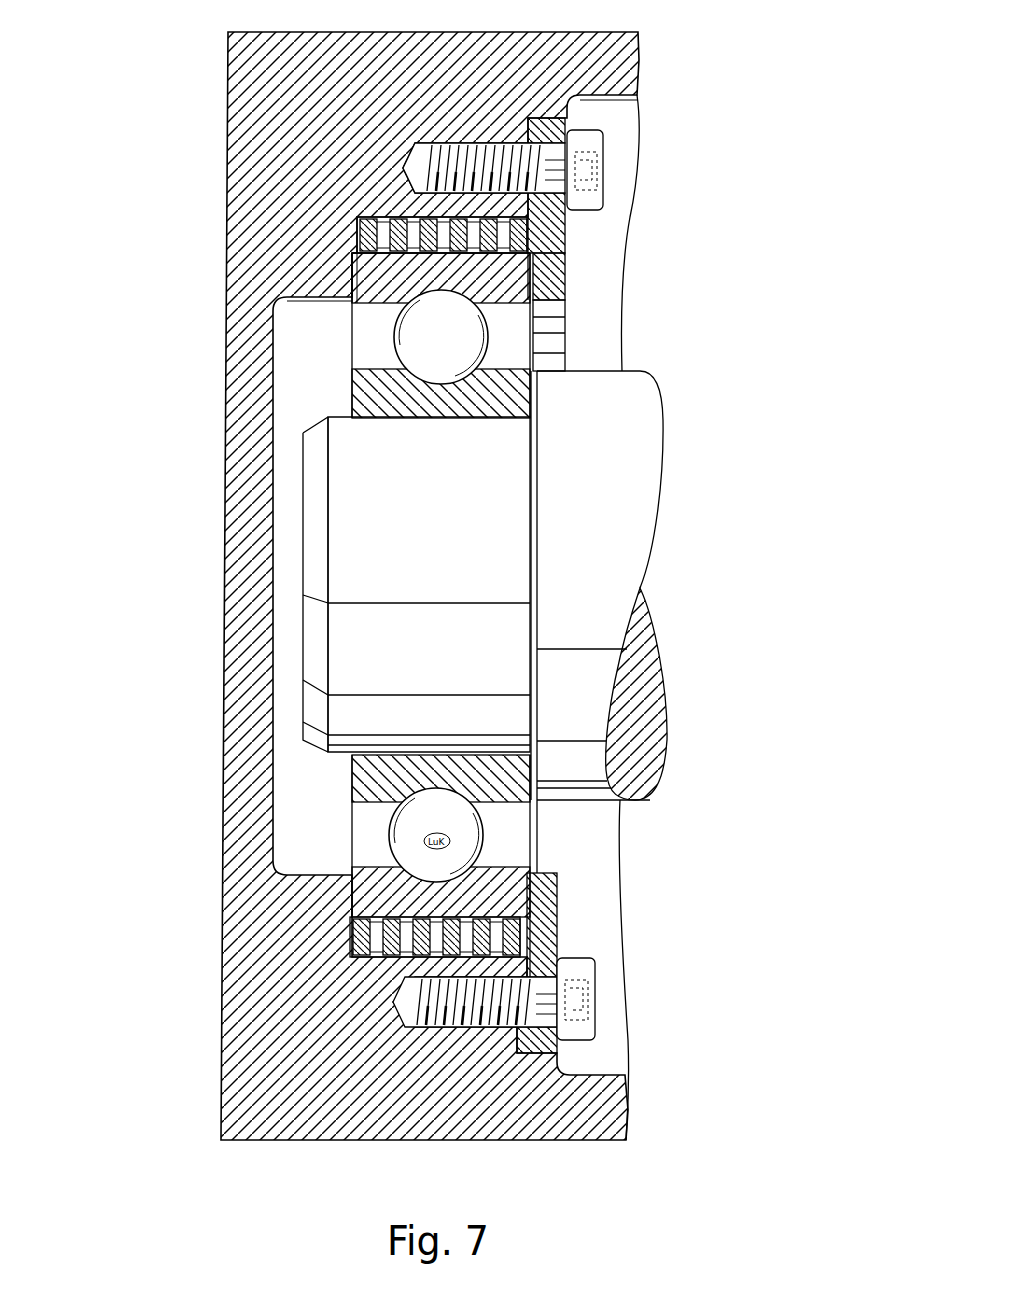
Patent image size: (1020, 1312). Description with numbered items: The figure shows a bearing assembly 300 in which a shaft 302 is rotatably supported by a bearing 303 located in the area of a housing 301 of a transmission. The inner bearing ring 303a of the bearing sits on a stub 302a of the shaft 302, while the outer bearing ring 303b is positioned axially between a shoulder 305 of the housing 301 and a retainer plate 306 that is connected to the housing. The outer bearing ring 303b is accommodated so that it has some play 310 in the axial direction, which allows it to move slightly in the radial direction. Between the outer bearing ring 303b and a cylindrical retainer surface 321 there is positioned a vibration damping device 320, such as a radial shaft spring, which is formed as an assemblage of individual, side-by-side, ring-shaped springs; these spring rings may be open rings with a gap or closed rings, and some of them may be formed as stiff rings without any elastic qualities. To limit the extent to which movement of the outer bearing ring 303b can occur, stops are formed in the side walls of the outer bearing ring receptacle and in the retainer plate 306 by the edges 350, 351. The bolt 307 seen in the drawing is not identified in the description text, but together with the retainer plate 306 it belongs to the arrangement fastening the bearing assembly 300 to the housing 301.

The bearing assembly 300 is at (722, 88).
The housing 301 is at (250, 1017).
The shaft 302 is at (622, 463).
The stub 302a is at (368, 430).
The bearing 303 is at (419, 338).
The inner bearing ring 303a is at (352, 397).
The outer bearing ring 303b is at (352, 306).
The shoulder 305 is at (340, 272).
The retainer plate 306 is at (560, 285).
The bolt 307 is at (597, 170).
The play 310 is at (368, 224).
The vibration damping device 320 is at (567, 281).
The cylindrical retainer surface 321 is at (500, 974).
The edge 350 is at (356, 247).
The edge 351 is at (460, 266).